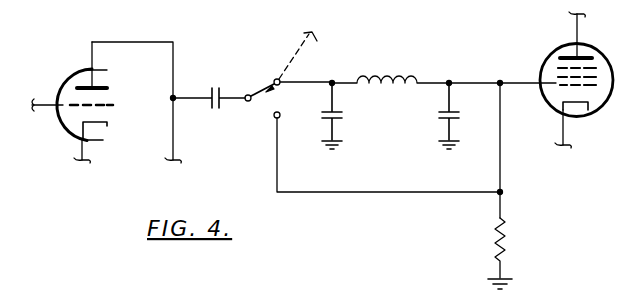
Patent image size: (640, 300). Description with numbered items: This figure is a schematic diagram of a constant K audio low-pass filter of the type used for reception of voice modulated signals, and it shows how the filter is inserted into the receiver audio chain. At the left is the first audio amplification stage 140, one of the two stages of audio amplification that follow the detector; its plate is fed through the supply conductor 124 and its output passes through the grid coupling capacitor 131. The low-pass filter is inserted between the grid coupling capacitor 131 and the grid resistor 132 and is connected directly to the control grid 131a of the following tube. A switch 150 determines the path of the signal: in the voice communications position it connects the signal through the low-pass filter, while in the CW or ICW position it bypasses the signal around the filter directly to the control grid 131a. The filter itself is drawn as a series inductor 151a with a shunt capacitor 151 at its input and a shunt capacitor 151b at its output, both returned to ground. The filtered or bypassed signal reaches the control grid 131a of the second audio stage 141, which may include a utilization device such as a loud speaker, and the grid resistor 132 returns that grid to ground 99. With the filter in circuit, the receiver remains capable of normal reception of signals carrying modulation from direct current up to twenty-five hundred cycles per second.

The first audio amplification stage 140 is at (58, 75).
The plate supply conductor 124 is at (163, 32).
The grid coupling capacitor 131 is at (230, 75).
The switch 150 is at (264, 94).
The inductor of filter 151a is at (398, 63).
The filter capacitor 151 is at (341, 114).
The filter capacitor 151b is at (442, 117).
The control grid 131a is at (520, 64).
The second audio stage 141 is at (607, 58).
The grid resistor 132 is at (503, 250).
The ground 99 is at (508, 279).